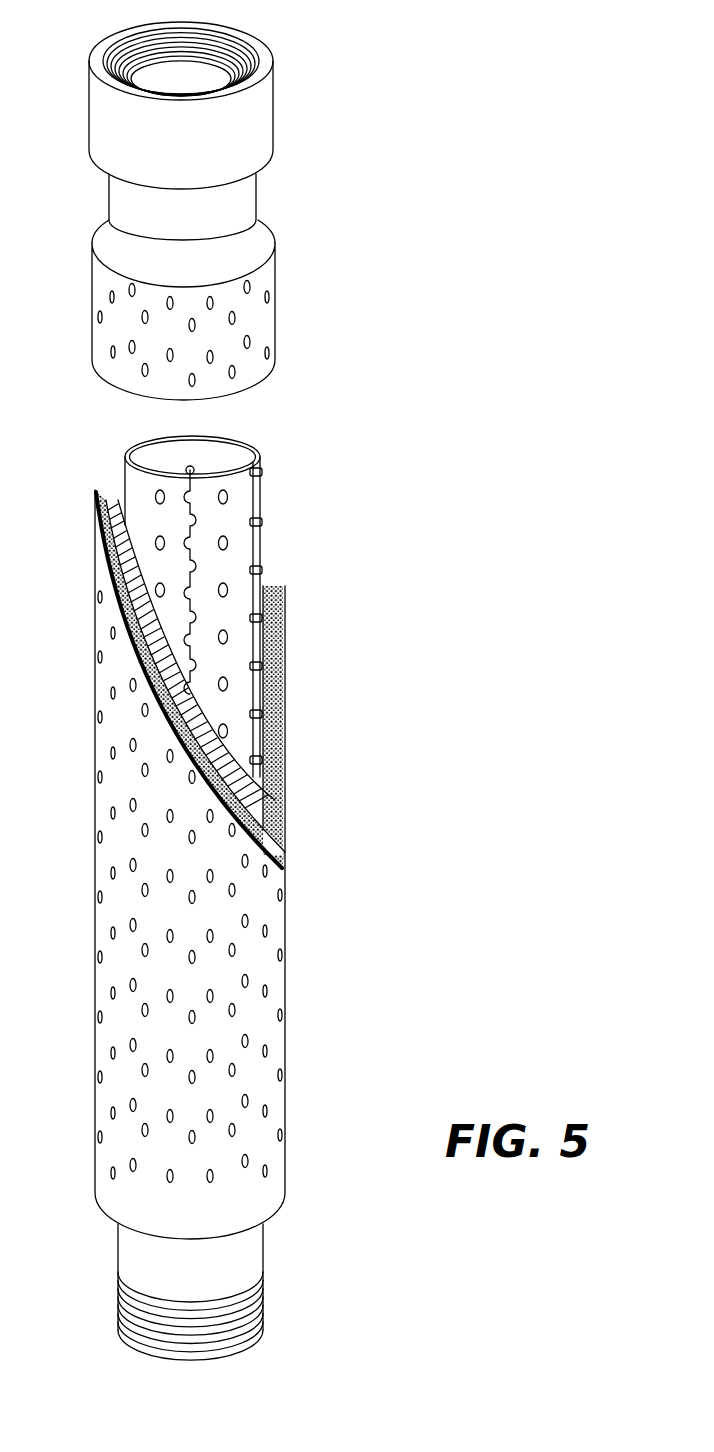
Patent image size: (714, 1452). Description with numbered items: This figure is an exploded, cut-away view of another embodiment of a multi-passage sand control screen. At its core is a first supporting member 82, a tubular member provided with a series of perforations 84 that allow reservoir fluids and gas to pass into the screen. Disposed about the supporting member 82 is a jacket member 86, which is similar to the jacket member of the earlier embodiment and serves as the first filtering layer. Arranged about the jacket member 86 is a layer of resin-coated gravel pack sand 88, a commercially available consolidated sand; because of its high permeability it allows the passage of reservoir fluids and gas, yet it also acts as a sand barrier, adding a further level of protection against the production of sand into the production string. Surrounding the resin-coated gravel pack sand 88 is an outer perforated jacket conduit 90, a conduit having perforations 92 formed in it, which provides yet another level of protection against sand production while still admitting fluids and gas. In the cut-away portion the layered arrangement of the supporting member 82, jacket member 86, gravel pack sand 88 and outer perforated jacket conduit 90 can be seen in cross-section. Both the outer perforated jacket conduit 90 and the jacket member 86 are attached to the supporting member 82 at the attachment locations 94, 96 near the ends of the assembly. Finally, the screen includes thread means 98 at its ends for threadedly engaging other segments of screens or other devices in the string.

The first supporting member 82 is at (140, 447).
The perforations 84 is at (222, 492).
The jacket member 86 is at (266, 520).
The resin-coated gravel pack sand 88 is at (279, 583).
The outer perforated jacket conduit 90 is at (287, 935).
The perforations 92 is at (248, 1040).
The attachment location 94 is at (257, 216).
The attachment location 96 is at (263, 1215).
The thread means 98 is at (208, 45).